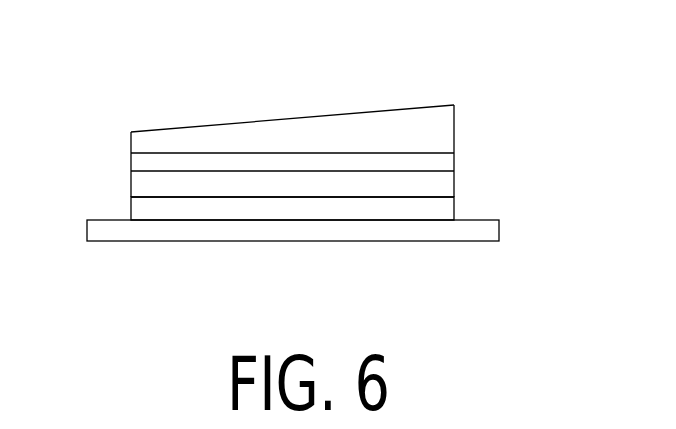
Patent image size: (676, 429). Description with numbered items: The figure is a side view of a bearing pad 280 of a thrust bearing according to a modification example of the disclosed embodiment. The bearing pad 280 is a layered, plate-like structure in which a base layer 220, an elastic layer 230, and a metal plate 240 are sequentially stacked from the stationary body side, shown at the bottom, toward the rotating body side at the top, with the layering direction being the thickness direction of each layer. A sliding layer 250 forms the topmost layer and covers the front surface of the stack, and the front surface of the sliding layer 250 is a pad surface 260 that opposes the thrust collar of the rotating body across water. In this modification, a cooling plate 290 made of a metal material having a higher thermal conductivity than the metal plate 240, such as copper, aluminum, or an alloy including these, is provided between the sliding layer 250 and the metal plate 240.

The base layer 220 is at (448, 230).
The elastic layer 230 is at (440, 208).
The metal plate 240 is at (440, 187).
The cooling plate 290 is at (440, 163).
The sliding layer 250 is at (438, 129).
The pad surface 260 is at (158, 129).
The bearing pad 280 is at (474, 57).